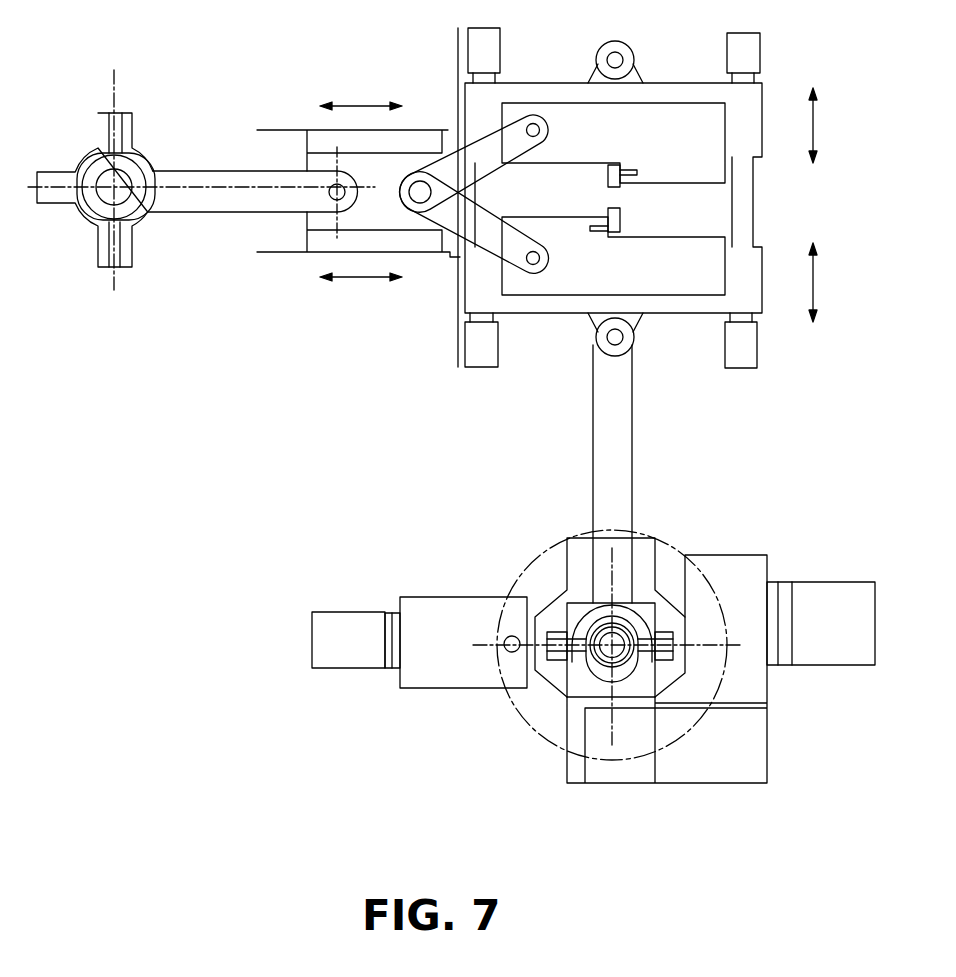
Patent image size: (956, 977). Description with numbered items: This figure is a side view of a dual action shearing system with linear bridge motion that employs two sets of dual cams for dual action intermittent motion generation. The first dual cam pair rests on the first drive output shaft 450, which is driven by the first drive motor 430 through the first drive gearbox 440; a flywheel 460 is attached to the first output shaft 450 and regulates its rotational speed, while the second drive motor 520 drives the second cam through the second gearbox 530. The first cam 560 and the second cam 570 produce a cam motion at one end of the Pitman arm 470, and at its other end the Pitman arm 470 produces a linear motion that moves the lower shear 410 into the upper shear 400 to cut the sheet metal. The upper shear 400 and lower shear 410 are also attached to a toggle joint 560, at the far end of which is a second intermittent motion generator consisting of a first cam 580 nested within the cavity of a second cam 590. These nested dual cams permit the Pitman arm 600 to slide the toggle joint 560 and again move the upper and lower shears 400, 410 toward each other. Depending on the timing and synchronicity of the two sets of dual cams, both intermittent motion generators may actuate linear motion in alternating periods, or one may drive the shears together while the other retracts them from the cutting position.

The upper shear 400 is at (708, 170).
The lower shear 410 is at (703, 257).
The first drive motor 430 is at (845, 582).
The first drive gearbox 440 is at (717, 553).
The first output shaft 450 is at (612, 647).
The flywheel 460 is at (555, 542).
The Pitman arm 470 is at (608, 430).
The second drive motor 520 is at (350, 623).
The gear box 530 is at (435, 610).
The first cam 560 is at (463, 163).
The second cam 570 is at (630, 657).
The first cam 580 is at (125, 170).
The second cam 590 is at (142, 148).
The Pitman arm 600 is at (213, 187).